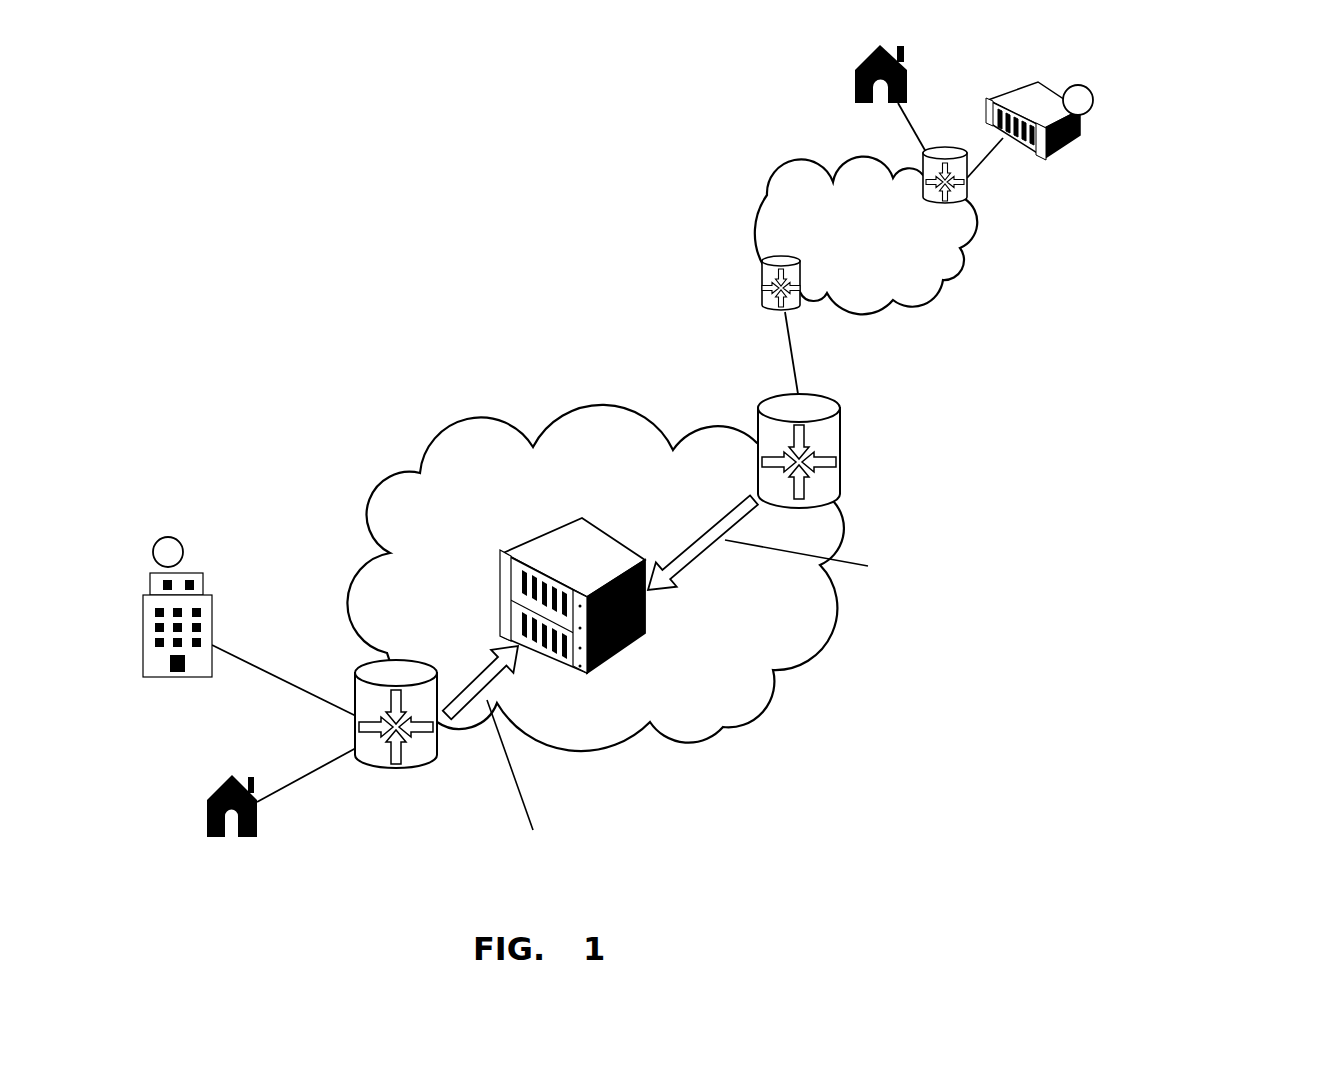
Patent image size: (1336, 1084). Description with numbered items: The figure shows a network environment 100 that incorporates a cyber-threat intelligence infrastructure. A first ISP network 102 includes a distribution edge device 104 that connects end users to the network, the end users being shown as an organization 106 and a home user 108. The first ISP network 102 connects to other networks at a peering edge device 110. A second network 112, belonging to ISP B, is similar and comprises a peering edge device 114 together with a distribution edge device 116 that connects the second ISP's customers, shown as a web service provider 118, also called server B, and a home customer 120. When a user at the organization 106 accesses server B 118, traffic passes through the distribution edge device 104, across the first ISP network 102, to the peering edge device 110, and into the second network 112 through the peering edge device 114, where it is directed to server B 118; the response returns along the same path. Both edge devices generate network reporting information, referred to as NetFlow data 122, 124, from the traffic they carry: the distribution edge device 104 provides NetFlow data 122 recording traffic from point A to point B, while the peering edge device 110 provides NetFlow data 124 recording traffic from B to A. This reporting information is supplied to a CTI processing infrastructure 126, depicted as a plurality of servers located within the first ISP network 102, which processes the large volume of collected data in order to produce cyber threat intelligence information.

The environment 100 is at (554, 79).
The first ISP network 102 is at (462, 425).
The distribution edge device 104 is at (410, 658).
The organization 106 is at (200, 572).
The home user 108 is at (207, 820).
The peering edge device 110 is at (757, 400).
The second network 112 is at (790, 170).
The peering edge device 114 is at (763, 275).
The distribution edge device 116 is at (970, 200).
The web service provider 118 is at (1070, 137).
The home customer 120 is at (855, 75).
The NetFlow data 122 is at (500, 684).
The NetFlow data 124 is at (730, 507).
The CTI processing infrastructure 126 is at (513, 558).